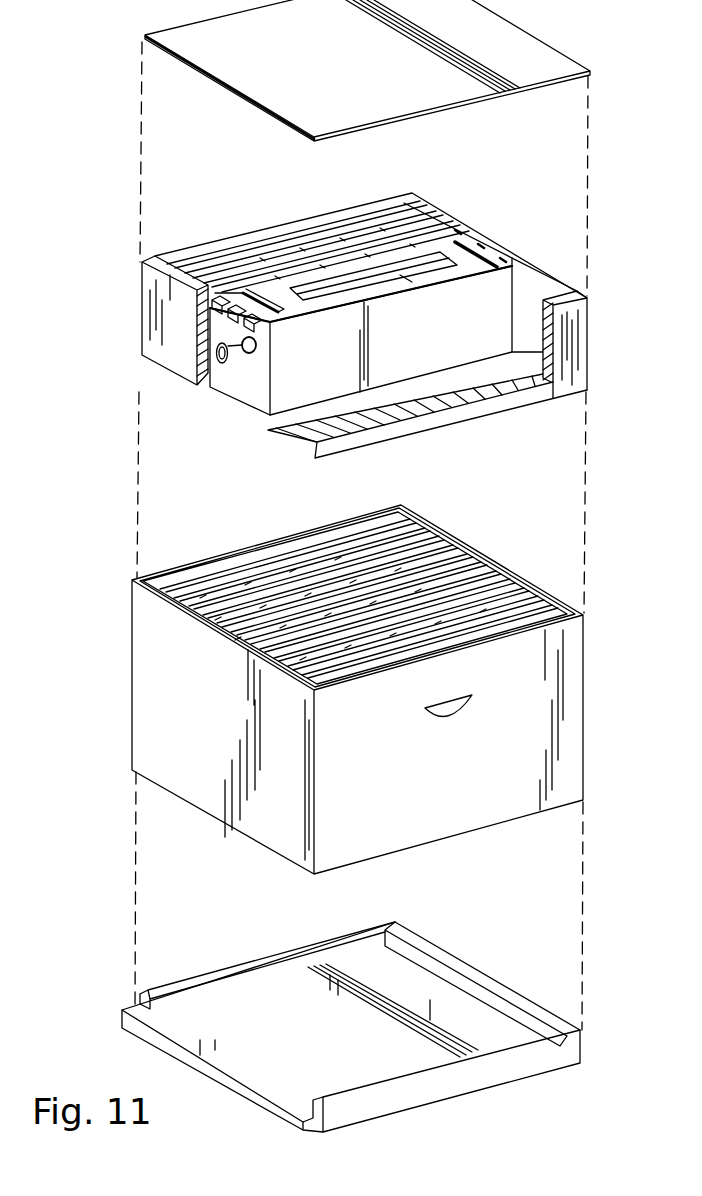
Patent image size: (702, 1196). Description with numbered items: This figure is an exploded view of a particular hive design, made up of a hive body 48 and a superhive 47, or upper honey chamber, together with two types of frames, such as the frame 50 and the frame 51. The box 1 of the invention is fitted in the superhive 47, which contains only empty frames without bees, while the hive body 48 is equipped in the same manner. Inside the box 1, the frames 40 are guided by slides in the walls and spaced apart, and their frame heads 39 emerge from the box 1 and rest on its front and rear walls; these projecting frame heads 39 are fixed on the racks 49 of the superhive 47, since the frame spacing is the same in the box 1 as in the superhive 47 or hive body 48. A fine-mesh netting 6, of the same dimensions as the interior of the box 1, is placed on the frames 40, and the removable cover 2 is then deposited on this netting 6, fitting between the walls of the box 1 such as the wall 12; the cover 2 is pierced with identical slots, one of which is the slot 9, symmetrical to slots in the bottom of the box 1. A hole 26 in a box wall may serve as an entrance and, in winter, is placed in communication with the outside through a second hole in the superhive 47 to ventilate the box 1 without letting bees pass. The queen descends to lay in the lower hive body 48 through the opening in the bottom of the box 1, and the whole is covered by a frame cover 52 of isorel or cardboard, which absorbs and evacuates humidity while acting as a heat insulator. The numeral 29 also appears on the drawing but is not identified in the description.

The box 1 is at (251, 418).
The removable cover 2 is at (300, 308).
The fine-mesh netting 6 is at (380, 279).
The slot 9 is at (280, 313).
The wall 12 is at (394, 372).
The hole 26 is at (226, 362).
The slot 29 is at (465, 268).
The frame heads 39 is at (472, 262).
The frames 40 is at (406, 280).
The superhive 47 is at (592, 395).
The hive body 48 is at (592, 684).
The racks 49 is at (518, 270).
The frame 50 is at (418, 203).
The frame 51 is at (407, 540).
The frame cover 52 is at (512, 102).